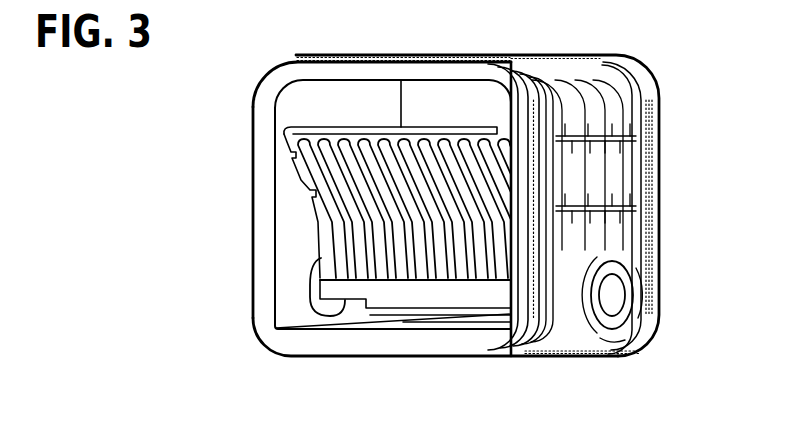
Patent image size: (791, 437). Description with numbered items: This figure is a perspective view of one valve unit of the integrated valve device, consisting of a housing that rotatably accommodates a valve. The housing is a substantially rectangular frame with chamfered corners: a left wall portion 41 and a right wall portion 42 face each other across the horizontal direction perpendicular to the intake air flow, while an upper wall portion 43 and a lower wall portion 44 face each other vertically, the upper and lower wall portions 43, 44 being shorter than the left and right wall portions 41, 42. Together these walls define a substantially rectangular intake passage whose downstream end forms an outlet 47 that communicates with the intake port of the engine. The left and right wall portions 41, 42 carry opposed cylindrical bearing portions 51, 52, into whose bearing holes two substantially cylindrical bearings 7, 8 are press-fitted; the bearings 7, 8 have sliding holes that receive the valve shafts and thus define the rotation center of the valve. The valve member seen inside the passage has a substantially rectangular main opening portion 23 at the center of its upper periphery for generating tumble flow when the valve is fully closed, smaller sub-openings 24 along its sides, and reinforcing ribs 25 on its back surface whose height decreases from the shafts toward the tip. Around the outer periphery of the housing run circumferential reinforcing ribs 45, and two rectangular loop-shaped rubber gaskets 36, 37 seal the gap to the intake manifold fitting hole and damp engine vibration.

The gasket 36 is at (299, 55).
The main opening portion 23 is at (373, 128).
The upper wall portion 43 is at (417, 70).
The gasket 37 is at (517, 56).
The reinforcing rib 45 is at (595, 82).
The right wall portion 42 is at (617, 182).
The bearing portion 52 is at (603, 252).
The bearing 8 is at (628, 294).
The sub-opening 24 is at (311, 192).
The left wall portion 41 is at (252, 217).
The bearing 7 is at (311, 283).
The outlet 47 is at (282, 307).
The bearing portion 51 is at (306, 296).
The lower wall portion 44 is at (382, 345).
The reinforcing rib 25 is at (453, 279).